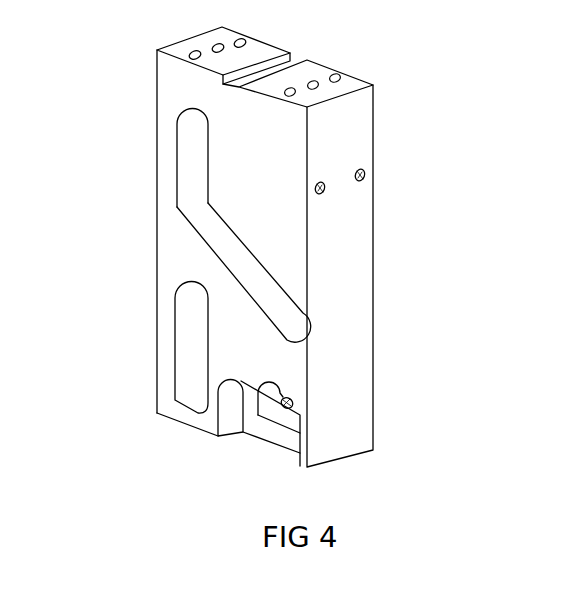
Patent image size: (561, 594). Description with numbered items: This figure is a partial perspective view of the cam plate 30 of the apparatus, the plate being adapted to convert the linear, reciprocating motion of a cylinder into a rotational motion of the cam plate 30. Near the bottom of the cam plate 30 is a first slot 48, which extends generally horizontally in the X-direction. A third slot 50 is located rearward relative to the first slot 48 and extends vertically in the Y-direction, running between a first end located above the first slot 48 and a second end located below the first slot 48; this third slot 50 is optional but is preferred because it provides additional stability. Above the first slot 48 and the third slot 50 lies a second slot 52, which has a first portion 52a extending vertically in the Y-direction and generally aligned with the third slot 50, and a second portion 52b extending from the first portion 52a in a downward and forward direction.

The cam plate 30 is at (375, 113).
The first slot 48 is at (255, 422).
The third slot 50 is at (177, 335).
The second slot 52 is at (238, 226).
The first portion 52a is at (177, 148).
The second portion 52b is at (304, 313).